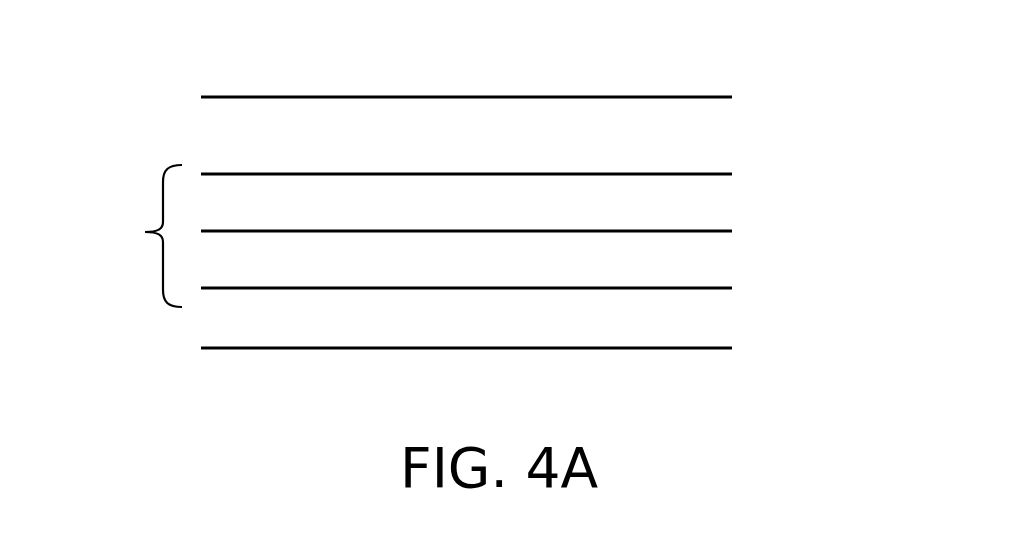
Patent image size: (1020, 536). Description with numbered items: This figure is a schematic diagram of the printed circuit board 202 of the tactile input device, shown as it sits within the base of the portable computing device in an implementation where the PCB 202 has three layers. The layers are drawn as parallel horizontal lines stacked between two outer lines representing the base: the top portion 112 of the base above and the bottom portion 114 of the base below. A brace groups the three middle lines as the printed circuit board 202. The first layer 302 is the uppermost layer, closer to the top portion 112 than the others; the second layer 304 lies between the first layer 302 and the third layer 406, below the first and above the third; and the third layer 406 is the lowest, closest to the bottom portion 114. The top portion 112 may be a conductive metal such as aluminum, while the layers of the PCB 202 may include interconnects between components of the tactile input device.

The top portion 112 is at (691, 96).
The first layer 302 is at (694, 168).
The second layer 304 is at (696, 224).
The third layer 406 is at (696, 285).
The bottom portion 114 is at (698, 344).
The PCB 202 is at (118, 236).